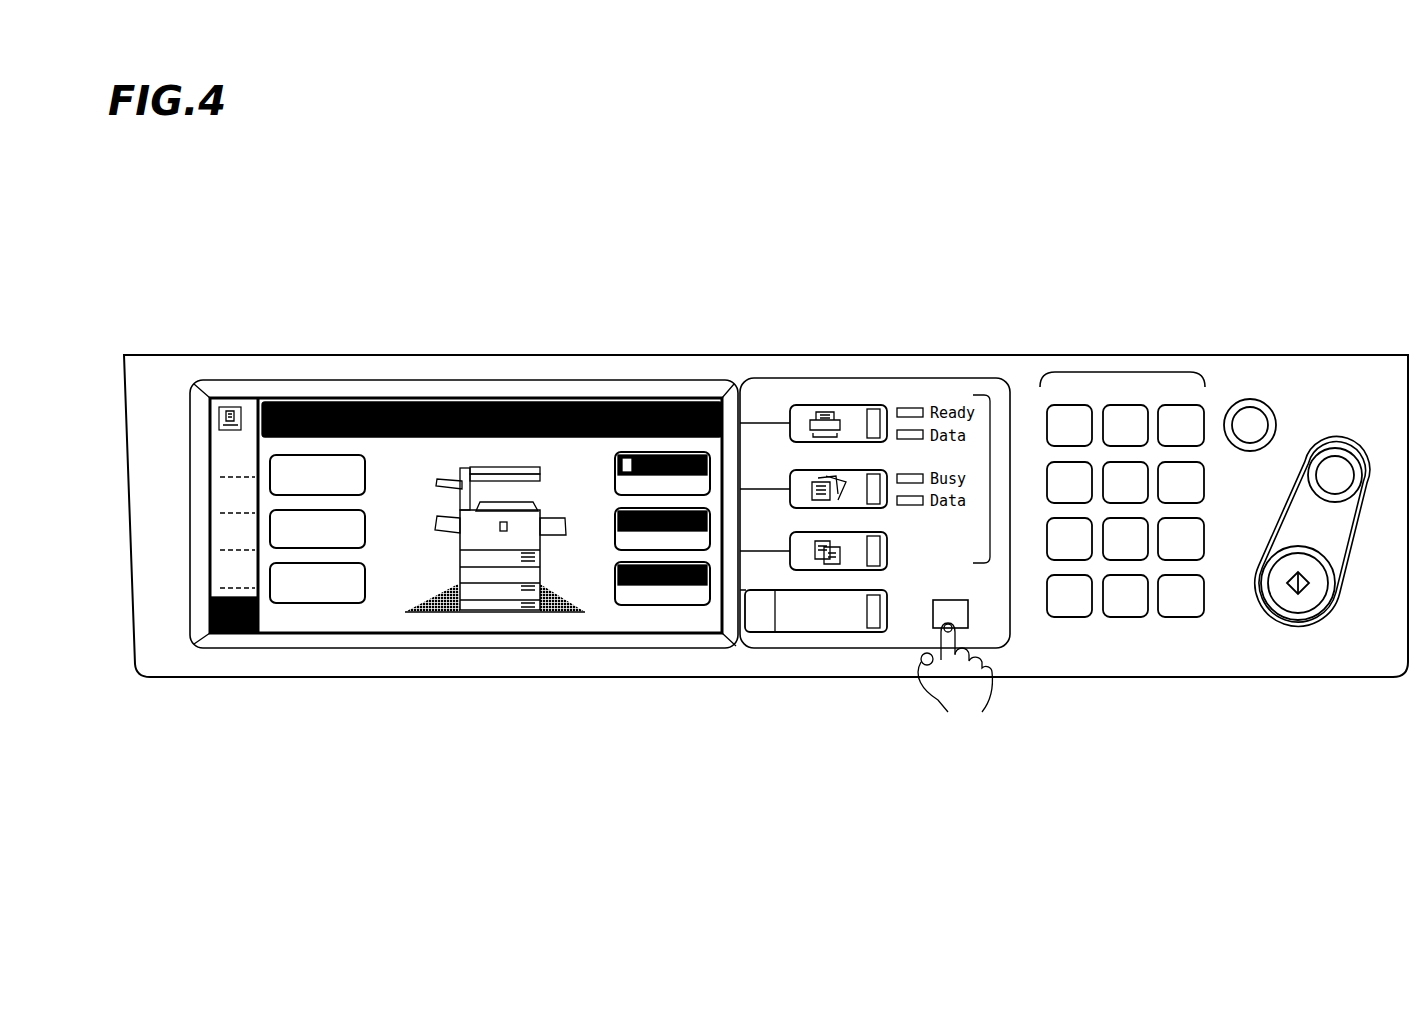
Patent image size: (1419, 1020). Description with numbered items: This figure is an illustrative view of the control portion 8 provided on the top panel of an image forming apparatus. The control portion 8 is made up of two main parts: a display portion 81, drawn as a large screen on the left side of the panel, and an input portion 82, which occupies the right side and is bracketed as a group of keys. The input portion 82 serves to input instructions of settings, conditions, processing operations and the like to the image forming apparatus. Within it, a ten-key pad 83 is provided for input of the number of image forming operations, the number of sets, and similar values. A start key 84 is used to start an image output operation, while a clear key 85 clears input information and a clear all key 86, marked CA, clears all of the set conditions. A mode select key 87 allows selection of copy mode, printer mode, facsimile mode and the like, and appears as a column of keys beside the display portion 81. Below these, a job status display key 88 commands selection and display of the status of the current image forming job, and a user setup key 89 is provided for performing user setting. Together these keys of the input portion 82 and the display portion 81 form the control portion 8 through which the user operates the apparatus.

The control portion 8 is at (766, 463).
The display portion 81 is at (548, 384).
The input portion 82 is at (737, 250).
The ten-key pad 83 is at (1117, 372).
The start key 84 is at (1291, 608).
The clear key 85 is at (1251, 399).
The clear all key 86 is at (1335, 447).
The mode select key 87 is at (990, 477).
The job status display key 88 is at (825, 618).
The user setup key 89 is at (935, 610).